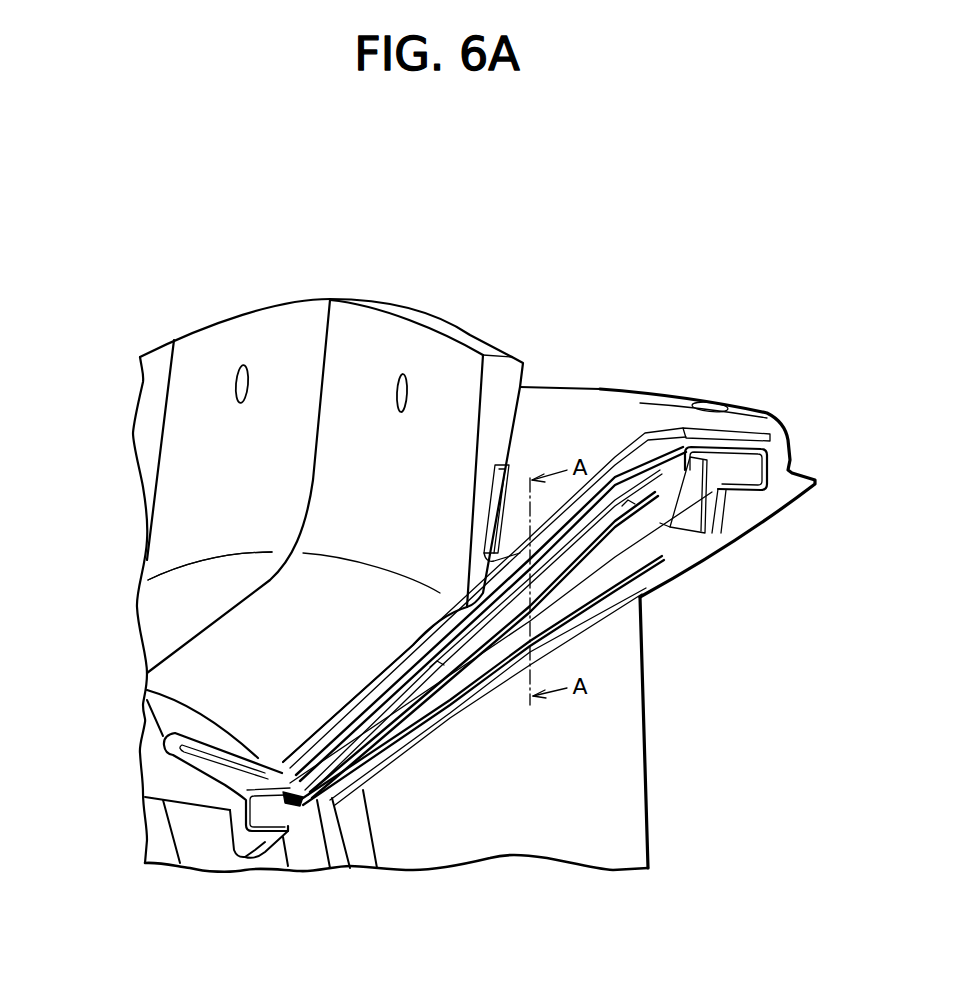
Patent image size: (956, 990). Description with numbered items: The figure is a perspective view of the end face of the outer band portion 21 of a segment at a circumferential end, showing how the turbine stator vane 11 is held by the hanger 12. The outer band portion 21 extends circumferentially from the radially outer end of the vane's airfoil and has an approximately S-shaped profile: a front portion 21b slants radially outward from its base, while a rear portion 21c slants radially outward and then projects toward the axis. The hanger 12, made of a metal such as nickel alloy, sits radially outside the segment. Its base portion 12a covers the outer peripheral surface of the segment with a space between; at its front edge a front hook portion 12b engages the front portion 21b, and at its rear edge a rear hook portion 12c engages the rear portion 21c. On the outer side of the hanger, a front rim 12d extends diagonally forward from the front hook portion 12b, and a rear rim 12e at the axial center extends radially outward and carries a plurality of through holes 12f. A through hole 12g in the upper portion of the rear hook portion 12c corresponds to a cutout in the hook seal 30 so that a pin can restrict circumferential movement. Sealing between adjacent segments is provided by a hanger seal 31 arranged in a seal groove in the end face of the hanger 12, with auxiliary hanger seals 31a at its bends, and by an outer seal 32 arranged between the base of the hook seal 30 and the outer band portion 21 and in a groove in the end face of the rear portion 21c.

The turbine stator vane 11 is at (658, 790).
The hanger 12 is at (540, 364).
The base portion 12a is at (253, 650).
The front hook portion 12b is at (255, 843).
The rear hook portion 12c is at (728, 514).
The front rim 12d is at (148, 718).
The rear rim 12e is at (472, 336).
The through holes 12f is at (240, 379).
The through hole 12g is at (711, 401).
The outer band portion 21 is at (580, 628).
The front portion 21b is at (258, 807).
The rear portion 21c is at (740, 470).
The hook seal 30 is at (605, 548).
The hanger seal 31 is at (655, 453).
The auxiliary hanger seal 31a is at (475, 580).
The outer seal 32 is at (652, 552).